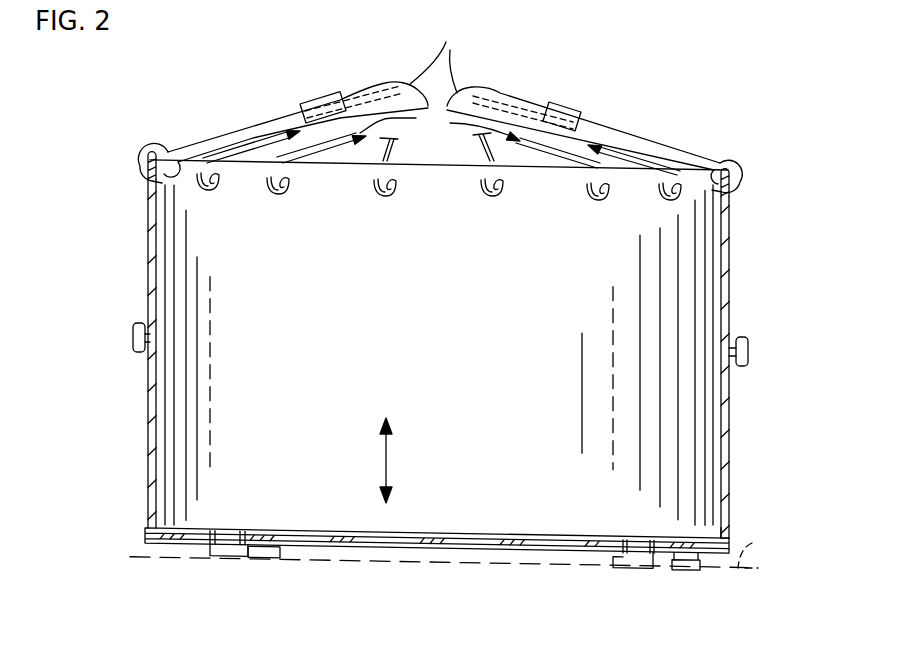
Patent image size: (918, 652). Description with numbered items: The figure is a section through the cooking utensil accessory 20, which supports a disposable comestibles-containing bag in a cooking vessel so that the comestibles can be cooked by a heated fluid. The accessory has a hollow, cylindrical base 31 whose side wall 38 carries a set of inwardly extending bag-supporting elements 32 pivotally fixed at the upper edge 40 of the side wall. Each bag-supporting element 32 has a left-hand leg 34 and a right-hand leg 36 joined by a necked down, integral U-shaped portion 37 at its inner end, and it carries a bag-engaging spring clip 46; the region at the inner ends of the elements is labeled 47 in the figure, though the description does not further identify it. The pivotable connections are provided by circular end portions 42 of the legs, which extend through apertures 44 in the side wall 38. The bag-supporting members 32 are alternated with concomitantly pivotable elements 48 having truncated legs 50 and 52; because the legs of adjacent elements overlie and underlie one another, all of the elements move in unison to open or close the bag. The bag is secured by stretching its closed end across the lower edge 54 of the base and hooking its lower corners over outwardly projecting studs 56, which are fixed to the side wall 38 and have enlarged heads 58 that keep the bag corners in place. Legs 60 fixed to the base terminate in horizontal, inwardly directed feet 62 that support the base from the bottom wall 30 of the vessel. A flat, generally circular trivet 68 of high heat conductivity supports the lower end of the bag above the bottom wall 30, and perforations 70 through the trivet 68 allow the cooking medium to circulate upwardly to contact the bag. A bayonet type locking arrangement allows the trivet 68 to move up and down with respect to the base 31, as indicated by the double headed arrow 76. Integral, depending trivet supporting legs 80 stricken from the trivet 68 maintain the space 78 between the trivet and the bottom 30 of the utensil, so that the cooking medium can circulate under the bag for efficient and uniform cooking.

The cooking utensil accessory 20 is at (636, 72).
The bottom wall 30 is at (755, 544).
The base 31 is at (755, 252).
The bag-supporting element 32 is at (256, 112).
The left-hand leg 34 is at (700, 148).
The right-hand leg 36 is at (205, 138).
The U-shaped portion 37 is at (330, 93).
The side wall 38 is at (354, 337).
The upper edge 40 is at (440, 160).
The circular end portion 42 is at (140, 164).
The aperture 44 is at (200, 183).
The spring clip 46 is at (372, 78).
The lid peak 47 is at (445, 59).
The pivotable element 48 is at (434, 135).
The truncated leg 50 is at (342, 160).
The truncated leg 52 is at (563, 166).
The lower edge 54 is at (518, 540).
The stud 56 is at (128, 308).
The enlarged head 58 is at (135, 342).
The leg 60 is at (210, 550).
The foot 62 is at (238, 558).
The trivet 68 is at (740, 535).
The perforations 70 is at (545, 543).
The double headed arrow 76 is at (385, 460).
The space 78 is at (438, 556).
The trivet supporting leg 80 is at (272, 556).